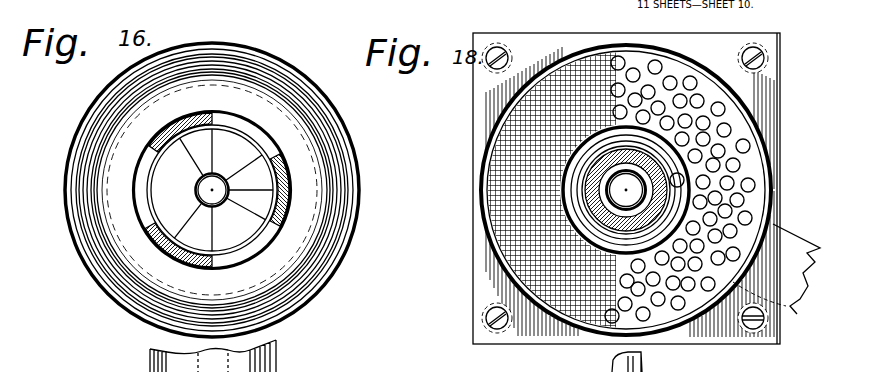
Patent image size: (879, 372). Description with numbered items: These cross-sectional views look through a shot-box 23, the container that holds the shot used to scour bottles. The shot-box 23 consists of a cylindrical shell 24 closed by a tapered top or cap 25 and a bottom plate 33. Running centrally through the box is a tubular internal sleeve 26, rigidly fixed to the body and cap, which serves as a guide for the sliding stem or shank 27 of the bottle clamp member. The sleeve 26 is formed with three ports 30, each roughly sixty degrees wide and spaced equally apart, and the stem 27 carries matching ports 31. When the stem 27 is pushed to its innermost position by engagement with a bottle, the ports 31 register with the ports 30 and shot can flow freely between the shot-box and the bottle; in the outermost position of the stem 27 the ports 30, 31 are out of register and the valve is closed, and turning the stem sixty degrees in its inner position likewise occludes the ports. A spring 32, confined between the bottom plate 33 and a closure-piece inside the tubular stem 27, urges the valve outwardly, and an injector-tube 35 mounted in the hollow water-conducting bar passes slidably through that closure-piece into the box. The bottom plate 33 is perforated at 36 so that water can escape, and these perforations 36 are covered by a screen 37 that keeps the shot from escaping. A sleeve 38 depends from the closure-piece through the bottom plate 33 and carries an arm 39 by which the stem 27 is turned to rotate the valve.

In FIG. 16, the shot-box 23 is at (229, 190).
In FIG. 18, the shot-box 23 is at (763, 136).
In FIG. 16, the tapered top or cap 25 is at (297, 229).
In FIG. 16, the sliding stem or shank of clamp member 27 is at (159, 194).
In FIG. 16, the ports 30 is at (252, 243).
In FIG. 16, the ports 31 is at (244, 240).
In FIG. 16, the injector-tube 35 is at (215, 177).
In FIG. 18, the cylindrical shell 24 is at (763, 150).
In FIG. 18, the central tubular internal sleeve 26 is at (681, 157).
In FIG. 18, the spring 32 is at (736, 215).
In FIG. 18, the bottom plate 33 is at (781, 80).
In FIG. 18, the perforations 36 is at (719, 101).
In FIG. 18, the screen 37 is at (490, 249).
In FIG. 18, the sleeve 38 is at (662, 183).
In FIG. 18, the arm 39 is at (788, 244).